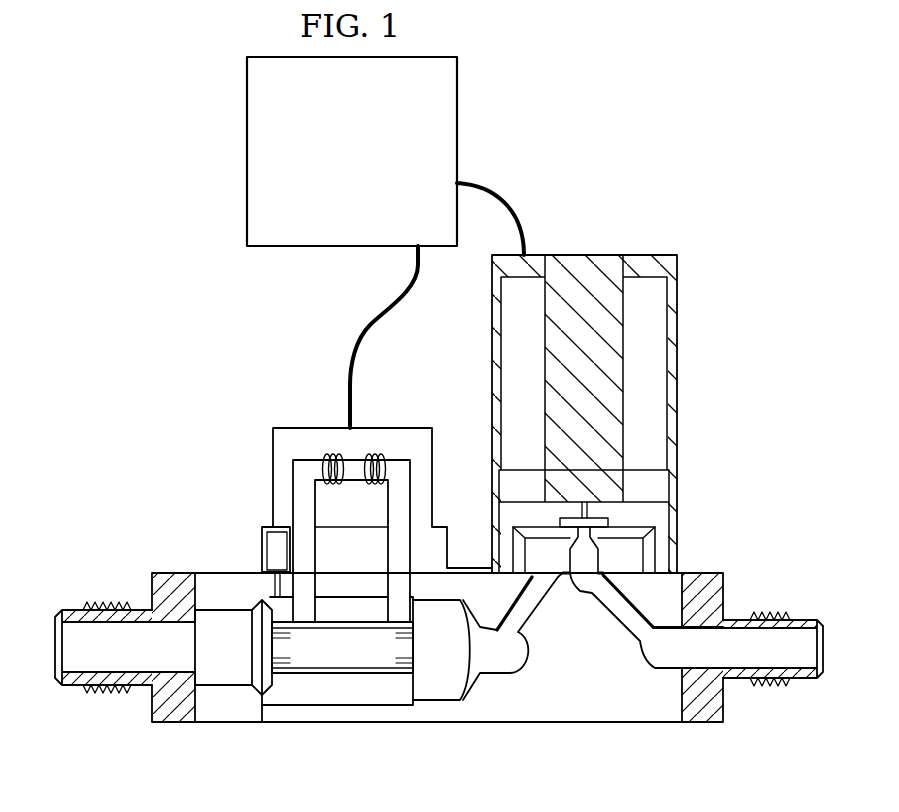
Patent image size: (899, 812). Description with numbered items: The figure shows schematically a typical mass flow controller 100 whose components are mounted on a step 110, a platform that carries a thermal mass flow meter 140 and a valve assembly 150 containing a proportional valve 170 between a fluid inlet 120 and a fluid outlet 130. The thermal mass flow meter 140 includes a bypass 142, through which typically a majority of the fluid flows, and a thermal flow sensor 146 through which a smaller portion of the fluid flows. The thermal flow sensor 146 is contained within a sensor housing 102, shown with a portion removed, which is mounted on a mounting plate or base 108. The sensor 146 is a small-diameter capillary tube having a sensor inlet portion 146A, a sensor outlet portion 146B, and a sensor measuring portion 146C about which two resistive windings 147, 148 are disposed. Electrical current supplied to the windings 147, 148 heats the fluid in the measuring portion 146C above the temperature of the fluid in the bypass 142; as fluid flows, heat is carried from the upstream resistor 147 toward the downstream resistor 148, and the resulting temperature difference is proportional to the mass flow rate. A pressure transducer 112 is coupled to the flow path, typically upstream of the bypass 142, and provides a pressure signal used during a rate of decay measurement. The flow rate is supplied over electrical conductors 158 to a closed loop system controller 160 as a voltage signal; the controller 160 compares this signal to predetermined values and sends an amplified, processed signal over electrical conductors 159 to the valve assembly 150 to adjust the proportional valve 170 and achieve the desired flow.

The mass flow controller 100 is at (692, 129).
The sensor housing 102 is at (309, 506).
The mounting plate or base 108 is at (221, 560).
The step 110 is at (603, 712).
The pressure transducer 112 is at (277, 542).
The fluid inlet 120 is at (72, 687).
The fluid outlet 130 is at (803, 682).
The thermal mass flow meter 140 is at (268, 419).
The bypass 142 is at (342, 675).
The thermal flow sensor 146 is at (341, 417).
The sensor inlet portion 146A is at (298, 475).
The sensor outlet portion 146B is at (412, 497).
The sensor measuring portion 146C is at (298, 458).
The upstream resistive winding 147 is at (324, 455).
The downstream resistive winding 148 is at (378, 453).
The valve assembly 150 is at (616, 388).
The electrical conductors 158 is at (368, 328).
The electrical conductors 159 is at (506, 199).
The closed loop system controller 160 is at (372, 166).
The valve 170 is at (608, 518).